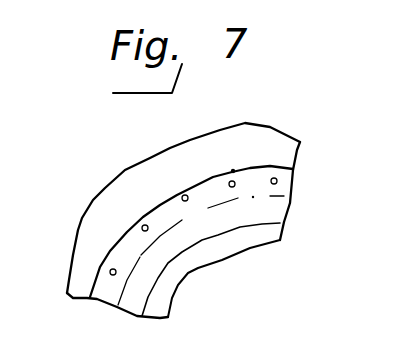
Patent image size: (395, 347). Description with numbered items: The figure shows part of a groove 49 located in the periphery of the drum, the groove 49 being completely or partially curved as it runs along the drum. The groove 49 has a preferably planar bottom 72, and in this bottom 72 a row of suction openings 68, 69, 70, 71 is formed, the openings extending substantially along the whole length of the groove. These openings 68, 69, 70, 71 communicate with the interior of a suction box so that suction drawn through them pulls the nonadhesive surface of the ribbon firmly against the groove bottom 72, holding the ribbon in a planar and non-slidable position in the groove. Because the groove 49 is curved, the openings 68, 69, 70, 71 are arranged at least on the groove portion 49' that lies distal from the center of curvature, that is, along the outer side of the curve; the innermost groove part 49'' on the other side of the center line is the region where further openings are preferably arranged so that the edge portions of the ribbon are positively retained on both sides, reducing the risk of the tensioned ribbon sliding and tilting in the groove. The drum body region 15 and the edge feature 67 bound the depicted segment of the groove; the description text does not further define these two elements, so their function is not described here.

The blade segment body 15 is at (110, 192).
The groove 49 is at (191, 197).
The groove portion 49' is at (148, 262).
The innermost groove part 49'' is at (225, 220).
The right end face 67 is at (283, 197).
The suction opening 68 is at (110, 271).
The suction opening 69 is at (135, 186).
The suction opening 70 is at (178, 161).
The suction opening 71 is at (235, 181).
The bottom 72 is at (278, 212).